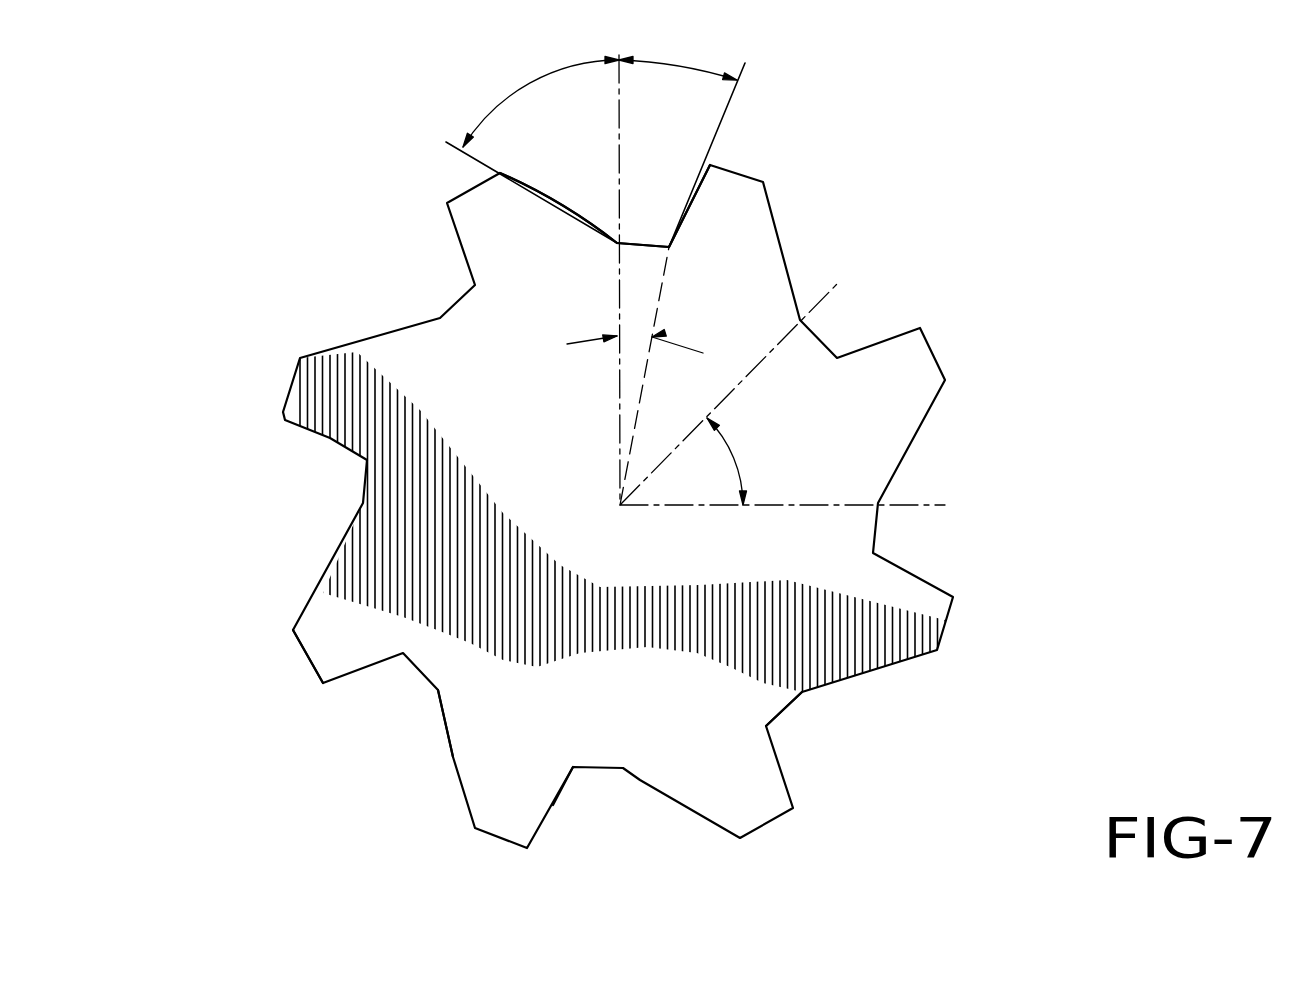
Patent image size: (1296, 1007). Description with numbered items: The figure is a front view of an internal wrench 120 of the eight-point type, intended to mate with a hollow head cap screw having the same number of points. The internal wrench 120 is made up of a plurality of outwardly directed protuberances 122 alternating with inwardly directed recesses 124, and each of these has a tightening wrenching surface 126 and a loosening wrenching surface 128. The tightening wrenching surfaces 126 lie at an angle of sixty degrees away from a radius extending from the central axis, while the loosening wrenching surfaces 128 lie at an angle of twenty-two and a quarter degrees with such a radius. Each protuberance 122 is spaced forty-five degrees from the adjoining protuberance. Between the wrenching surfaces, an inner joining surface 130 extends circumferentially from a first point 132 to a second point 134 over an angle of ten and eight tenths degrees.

The internal wrench 120 is at (248, 197).
The outwardly directed protuberance 122 is at (323, 648).
The inwardly directed recess 124 is at (803, 720).
The tightening wrenching surface 126 is at (453, 757).
The loosening wrenching surface 128 is at (553, 805).
The inner joining surface 130 is at (640, 247).
The point 132 is at (617, 244).
The point 134 is at (671, 249).